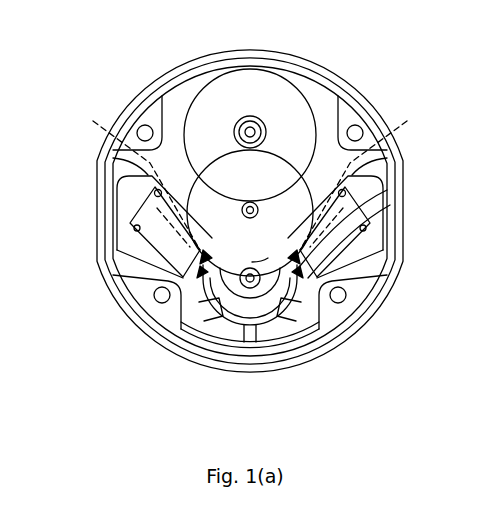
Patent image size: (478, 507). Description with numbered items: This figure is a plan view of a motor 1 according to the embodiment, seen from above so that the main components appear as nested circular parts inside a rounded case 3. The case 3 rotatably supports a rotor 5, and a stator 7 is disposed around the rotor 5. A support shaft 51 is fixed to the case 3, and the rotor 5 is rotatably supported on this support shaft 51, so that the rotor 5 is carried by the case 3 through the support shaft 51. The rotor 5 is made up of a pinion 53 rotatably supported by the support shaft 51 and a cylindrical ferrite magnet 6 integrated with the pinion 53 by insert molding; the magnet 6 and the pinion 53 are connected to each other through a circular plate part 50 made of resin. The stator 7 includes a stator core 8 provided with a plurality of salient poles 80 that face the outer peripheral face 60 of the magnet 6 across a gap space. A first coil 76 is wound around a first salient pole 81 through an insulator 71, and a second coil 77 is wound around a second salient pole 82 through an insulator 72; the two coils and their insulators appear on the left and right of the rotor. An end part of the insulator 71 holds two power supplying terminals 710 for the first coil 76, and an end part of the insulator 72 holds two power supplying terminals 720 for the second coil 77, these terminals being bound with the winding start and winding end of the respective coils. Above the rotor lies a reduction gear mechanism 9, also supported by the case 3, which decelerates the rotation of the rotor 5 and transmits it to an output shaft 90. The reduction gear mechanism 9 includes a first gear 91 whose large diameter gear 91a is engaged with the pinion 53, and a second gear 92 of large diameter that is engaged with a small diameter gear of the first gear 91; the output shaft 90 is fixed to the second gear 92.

The motor 1 is at (397, 63).
The case 3 is at (372, 323).
The rotor 5 is at (254, 258).
The magnet 6 is at (262, 310).
The stator 7 is at (143, 412).
The stator core 8 is at (250, 345).
The reduction gear mechanism 9 is at (203, 77).
The circular plate part 50 is at (291, 256).
The support shaft 51 is at (247, 268).
The pinion 53 is at (255, 262).
The outer peripheral face 60 is at (322, 226).
The insulator 71 is at (145, 223).
The insulator 72 is at (357, 217).
The first coil 76 is at (186, 252).
The second coil 77 is at (323, 247).
The salient poles 80 is at (204, 280).
The first salient pole 81 is at (119, 178).
The second salient pole 82 is at (378, 178).
The output shaft 90 is at (248, 122).
The first gear 91 is at (172, 77).
The large diameter gear 91a is at (300, 138).
The second gear 92 is at (265, 77).
The power supplying terminals 710 is at (155, 194).
The power supplying terminals 720 is at (345, 193).